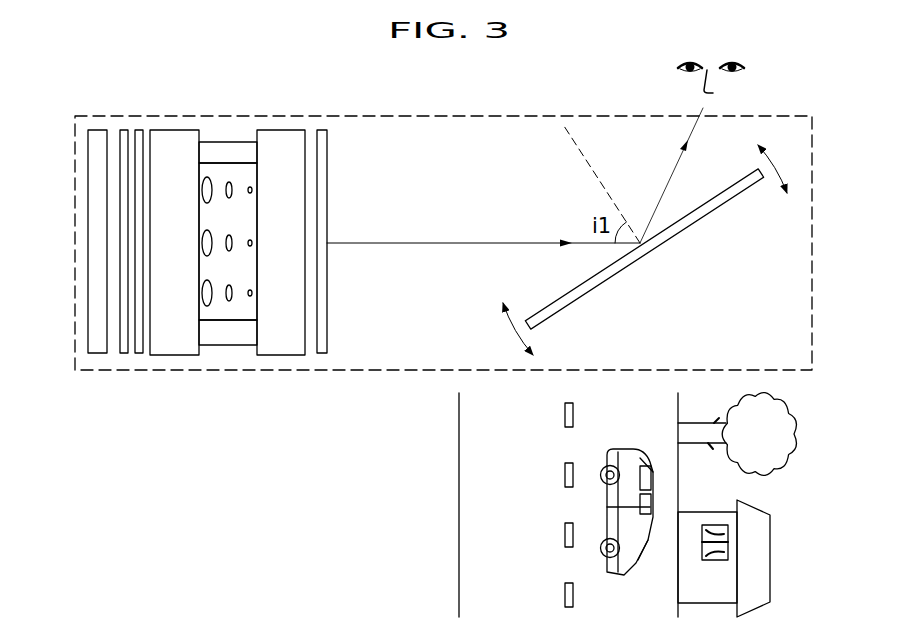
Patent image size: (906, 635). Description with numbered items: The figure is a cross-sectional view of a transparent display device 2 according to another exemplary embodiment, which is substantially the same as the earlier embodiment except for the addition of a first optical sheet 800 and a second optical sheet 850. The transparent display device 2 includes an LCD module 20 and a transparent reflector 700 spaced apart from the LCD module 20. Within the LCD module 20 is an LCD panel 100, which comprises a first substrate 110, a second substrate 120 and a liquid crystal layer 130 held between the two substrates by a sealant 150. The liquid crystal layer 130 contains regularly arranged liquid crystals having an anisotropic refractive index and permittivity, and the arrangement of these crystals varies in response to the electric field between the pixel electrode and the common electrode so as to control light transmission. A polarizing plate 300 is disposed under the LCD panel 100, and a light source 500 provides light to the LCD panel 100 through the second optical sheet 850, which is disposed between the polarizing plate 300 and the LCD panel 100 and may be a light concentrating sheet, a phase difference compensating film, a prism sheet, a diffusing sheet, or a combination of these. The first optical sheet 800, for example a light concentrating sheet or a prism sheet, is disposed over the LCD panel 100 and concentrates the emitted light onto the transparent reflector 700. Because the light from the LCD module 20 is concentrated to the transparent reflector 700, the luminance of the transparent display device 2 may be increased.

The transparent display device 2 is at (73, 138).
The LCD module 20 is at (209, 322).
The LCD panel 100 is at (227, 304).
The first substrate 110 is at (170, 355).
The second substrate 120 is at (281, 286).
The liquid crystal layer 130 is at (210, 315).
The sealant 150 is at (242, 341).
The polarizing plate 300 is at (124, 353).
The light source 500 is at (96, 353).
The transparent reflector 700 is at (685, 227).
The first optical sheet 800 is at (322, 302).
The second optical sheet 850 is at (139, 353).